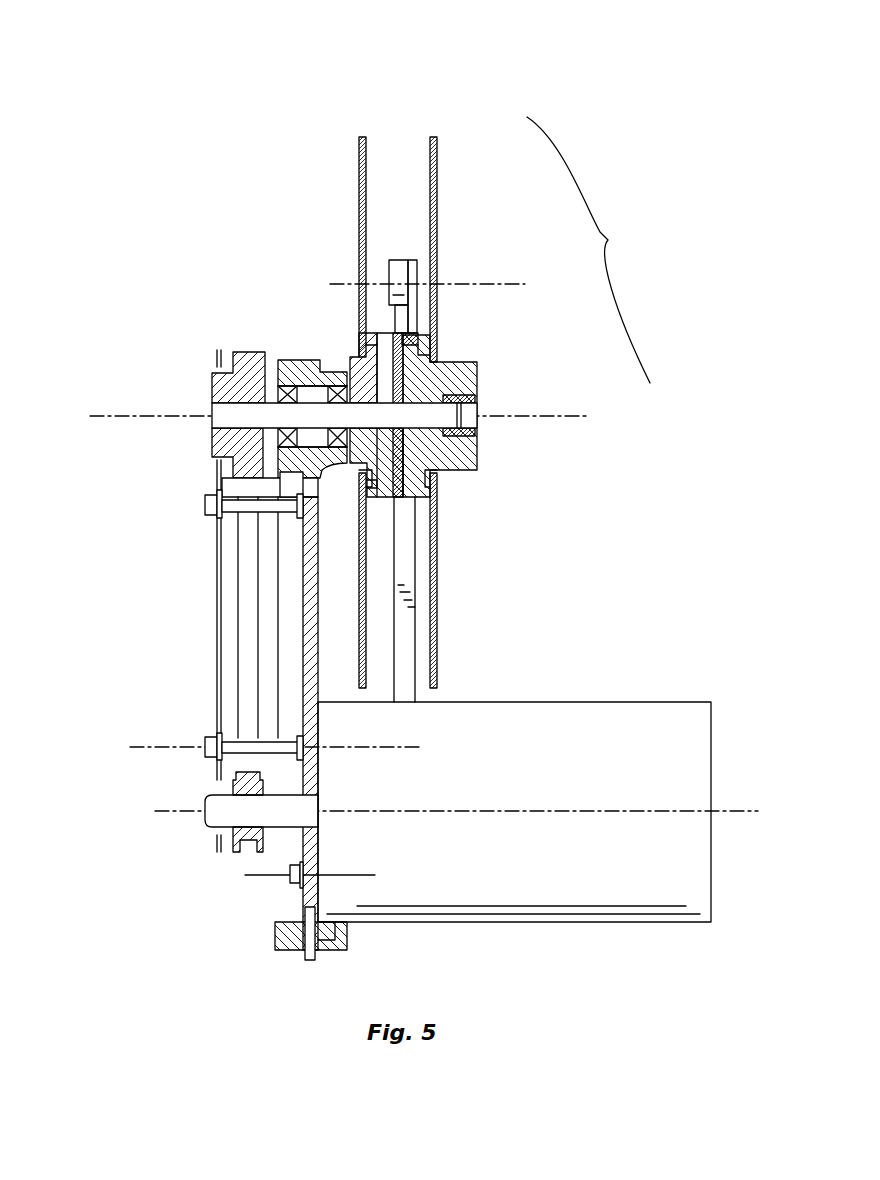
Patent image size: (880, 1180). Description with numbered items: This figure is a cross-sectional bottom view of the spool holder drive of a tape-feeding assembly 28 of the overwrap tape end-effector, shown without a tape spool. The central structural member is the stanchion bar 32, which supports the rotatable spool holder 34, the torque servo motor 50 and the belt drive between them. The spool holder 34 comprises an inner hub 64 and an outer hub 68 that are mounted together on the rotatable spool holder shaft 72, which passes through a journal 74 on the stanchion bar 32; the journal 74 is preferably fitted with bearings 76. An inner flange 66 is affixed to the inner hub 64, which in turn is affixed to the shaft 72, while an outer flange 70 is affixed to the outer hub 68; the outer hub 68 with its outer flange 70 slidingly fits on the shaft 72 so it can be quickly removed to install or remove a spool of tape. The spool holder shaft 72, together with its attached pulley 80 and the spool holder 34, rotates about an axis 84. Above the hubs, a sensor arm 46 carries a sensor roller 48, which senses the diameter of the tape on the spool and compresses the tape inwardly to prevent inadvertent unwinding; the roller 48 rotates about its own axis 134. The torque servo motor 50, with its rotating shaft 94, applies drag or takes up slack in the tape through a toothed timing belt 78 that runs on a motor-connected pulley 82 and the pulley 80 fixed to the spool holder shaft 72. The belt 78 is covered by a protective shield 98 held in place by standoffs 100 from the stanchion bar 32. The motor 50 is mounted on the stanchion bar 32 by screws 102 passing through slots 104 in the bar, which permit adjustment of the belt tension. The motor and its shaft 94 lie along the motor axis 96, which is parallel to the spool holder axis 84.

The tape-feeding assembly 28 is at (690, 87).
The stanchion bar 32 is at (305, 562).
The spool holder 34 is at (588, 250).
The sensor arm 46 is at (405, 642).
The sensor roller 48 is at (400, 272).
The torque servo motor 50 is at (643, 773).
The inner hub 64 is at (353, 365).
The inner flange 66 is at (360, 172).
The outer hub 68 is at (470, 377).
The outer flange 70 is at (437, 172).
The spool holder shaft 72 is at (400, 414).
The journal 74 is at (292, 368).
The bearings 76 is at (335, 383).
The toothed timing belt 78 is at (245, 614).
The pulley 80 is at (248, 355).
The pulley 82 is at (250, 848).
The axis 84 is at (115, 416).
The rotating shaft 94 is at (213, 825).
The motor axis 96 is at (727, 809).
The protective shield 98 is at (217, 643).
The standoffs 100 is at (240, 487).
The screws 102 is at (205, 748).
The slots 104 is at (293, 663).
The axis 134 is at (505, 285).